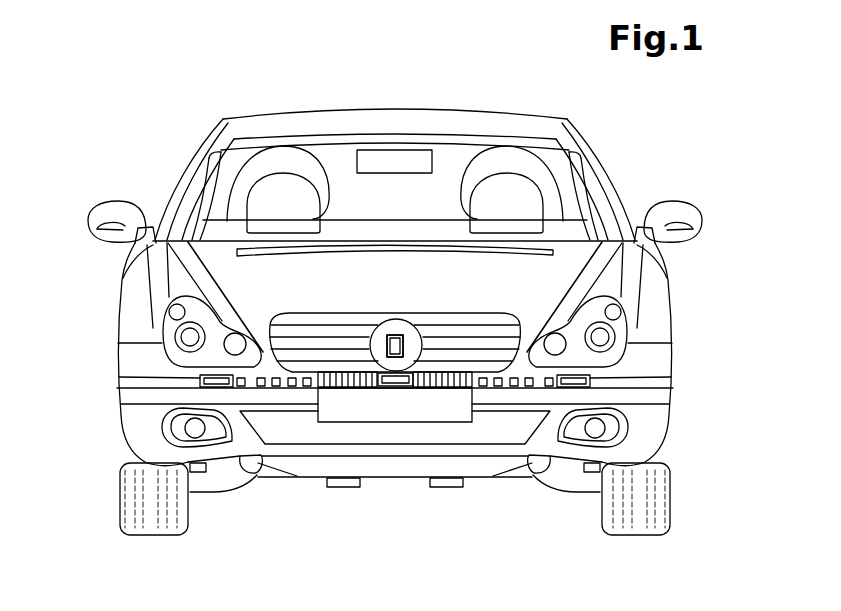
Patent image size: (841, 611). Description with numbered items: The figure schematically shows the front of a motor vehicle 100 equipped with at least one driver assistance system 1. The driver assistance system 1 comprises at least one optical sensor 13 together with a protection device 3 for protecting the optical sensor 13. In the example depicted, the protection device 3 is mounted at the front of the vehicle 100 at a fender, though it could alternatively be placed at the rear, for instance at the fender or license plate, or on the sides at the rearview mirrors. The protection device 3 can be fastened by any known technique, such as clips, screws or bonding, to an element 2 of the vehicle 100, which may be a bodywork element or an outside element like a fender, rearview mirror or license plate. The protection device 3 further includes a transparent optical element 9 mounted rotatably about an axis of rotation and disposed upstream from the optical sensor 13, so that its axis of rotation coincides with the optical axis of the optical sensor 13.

The motor vehicle 100 is at (158, 165).
The driver assistance system 1 is at (391, 295).
The element of the vehicle 2 is at (404, 333).
The optical sensor 13 is at (403, 323).
The protection device 3 is at (359, 352).
The optical element 9 is at (394, 358).